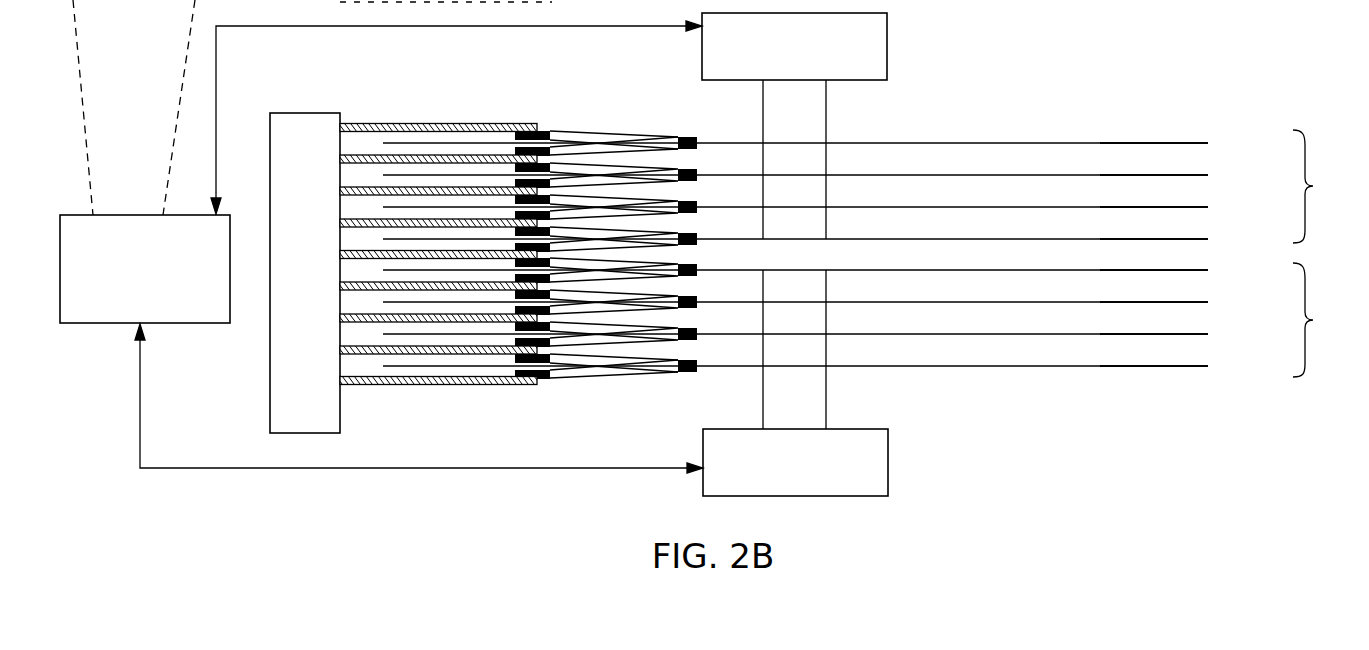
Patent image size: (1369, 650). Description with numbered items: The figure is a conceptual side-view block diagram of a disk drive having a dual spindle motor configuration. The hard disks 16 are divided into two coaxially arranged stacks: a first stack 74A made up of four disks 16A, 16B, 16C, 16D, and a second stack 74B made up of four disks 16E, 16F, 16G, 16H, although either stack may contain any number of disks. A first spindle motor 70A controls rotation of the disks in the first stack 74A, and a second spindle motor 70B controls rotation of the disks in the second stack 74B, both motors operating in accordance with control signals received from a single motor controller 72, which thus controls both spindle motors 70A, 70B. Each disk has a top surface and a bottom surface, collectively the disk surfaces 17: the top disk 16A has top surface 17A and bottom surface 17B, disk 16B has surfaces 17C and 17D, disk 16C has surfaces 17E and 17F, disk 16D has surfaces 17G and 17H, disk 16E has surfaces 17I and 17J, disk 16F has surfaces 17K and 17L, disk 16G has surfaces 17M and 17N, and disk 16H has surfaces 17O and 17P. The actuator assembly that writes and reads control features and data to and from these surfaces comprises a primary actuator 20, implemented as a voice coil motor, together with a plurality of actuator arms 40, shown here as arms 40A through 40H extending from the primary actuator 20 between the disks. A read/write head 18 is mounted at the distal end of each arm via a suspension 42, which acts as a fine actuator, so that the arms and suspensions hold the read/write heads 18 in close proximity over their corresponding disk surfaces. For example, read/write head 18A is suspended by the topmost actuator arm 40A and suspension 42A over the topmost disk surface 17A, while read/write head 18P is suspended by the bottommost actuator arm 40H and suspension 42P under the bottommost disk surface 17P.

The motor controller 72 is at (145, 269).
The primary actuator 20 is at (305, 273).
The first spindle motor 70A is at (794, 126).
The second spindle motor 70B is at (795, 383).
The actuator arms 40 is at (438, 242).
The actuator arm 40A is at (457, 123).
The actuator arm 40H is at (405, 386).
The suspension 42 is at (597, 227).
The suspension 42A is at (608, 129).
The suspension 42P is at (627, 379).
The read/write head 18 is at (717, 233).
The read/write head 18A is at (700, 136).
The read/write head 18P is at (702, 375).
The hard disks 16 is at (835, 221).
The disk 16A is at (1222, 143).
The disk 16B is at (1222, 175).
The disk 16C is at (1222, 207).
The disk 16D is at (1222, 239).
The disk 16E is at (1222, 270).
The disk 16F is at (1222, 302).
The disk 16G is at (1222, 334).
The disk 16H is at (1222, 366).
The disk surfaces 17 is at (1147, 223).
The top surface 17A is at (1150, 143).
The bottom surface 17B is at (1148, 143).
The top surface 17C is at (1150, 175).
The bottom surface 17D is at (1148, 175).
The top surface 17E is at (1150, 207).
The bottom surface 17F is at (1148, 207).
The top surface 17G is at (1150, 239).
The bottom surface 17H is at (1148, 239).
The top surface 17I is at (1150, 270).
The bottom surface 17J is at (1148, 270).
The top surface 17K is at (1150, 302).
The bottom surface 17L is at (1148, 302).
The top surface 17M is at (1150, 334).
The bottom surface 17N is at (1148, 334).
The top surface 17O is at (1150, 366).
The bottom surface 17P is at (1148, 366).
The first stack 74A is at (1313, 186).
The second stack 74B is at (1313, 320).